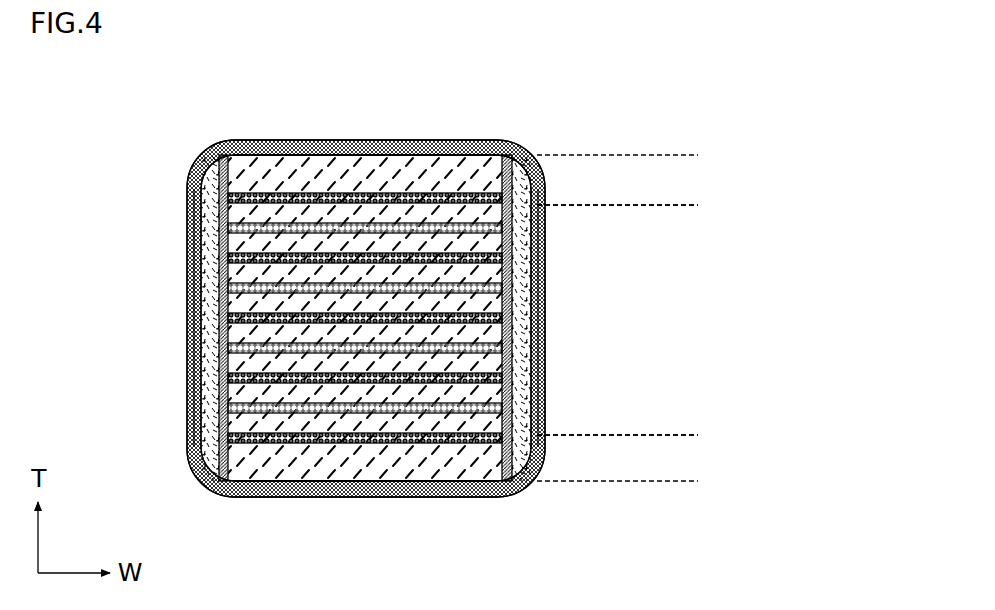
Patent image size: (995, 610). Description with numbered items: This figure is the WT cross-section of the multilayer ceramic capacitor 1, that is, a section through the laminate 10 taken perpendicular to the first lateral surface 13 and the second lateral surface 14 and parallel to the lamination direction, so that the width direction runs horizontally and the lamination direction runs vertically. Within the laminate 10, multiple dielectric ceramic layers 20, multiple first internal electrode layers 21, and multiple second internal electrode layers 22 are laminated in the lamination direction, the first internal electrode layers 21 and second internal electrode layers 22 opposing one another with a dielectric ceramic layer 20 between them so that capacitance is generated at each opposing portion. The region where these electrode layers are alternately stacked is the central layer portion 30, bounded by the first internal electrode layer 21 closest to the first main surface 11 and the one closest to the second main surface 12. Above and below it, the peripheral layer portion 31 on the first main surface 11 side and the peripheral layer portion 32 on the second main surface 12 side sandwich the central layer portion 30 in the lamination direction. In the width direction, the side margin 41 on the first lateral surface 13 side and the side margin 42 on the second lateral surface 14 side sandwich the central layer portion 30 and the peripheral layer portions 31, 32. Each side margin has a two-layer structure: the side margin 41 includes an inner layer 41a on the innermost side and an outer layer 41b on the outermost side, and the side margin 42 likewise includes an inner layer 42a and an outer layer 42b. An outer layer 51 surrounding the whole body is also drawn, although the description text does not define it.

The multilayer ceramic capacitor 1 is at (151, 113).
The laminate 10 is at (470, 146).
The first main surface 11 is at (266, 153).
The second main surface 12 is at (453, 497).
The first lateral surface 13 is at (200, 372).
The second lateral surface 14 is at (533, 372).
The dielectric ceramic layer 20 is at (390, 360).
The first internal electrode layer 21 is at (375, 317).
The second internal electrode layer 22 is at (412, 287).
The central layer portion 30 is at (699, 205).
The peripheral layer portion 31 is at (699, 155).
The peripheral layer portion 32 is at (699, 435).
The side margin 41 is at (133, 318).
The inner layer 41a is at (225, 209).
The outer layer 41b is at (213, 252).
The side margin 42 is at (595, 318).
The inner layer 42a is at (510, 263).
The outer layer 42b is at (520, 301).
The insulating coating layer 51 is at (222, 148).